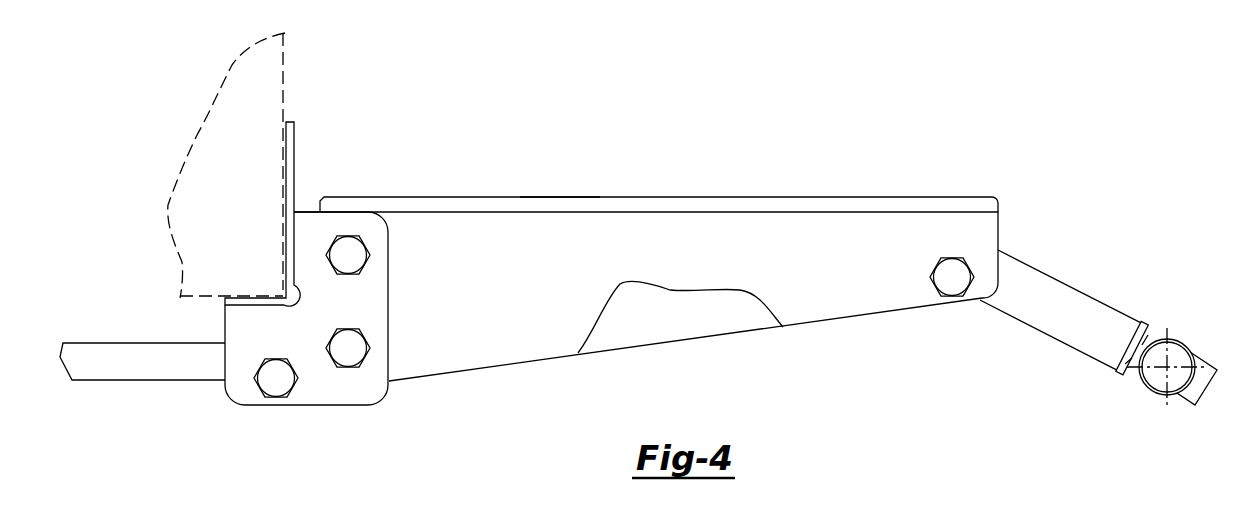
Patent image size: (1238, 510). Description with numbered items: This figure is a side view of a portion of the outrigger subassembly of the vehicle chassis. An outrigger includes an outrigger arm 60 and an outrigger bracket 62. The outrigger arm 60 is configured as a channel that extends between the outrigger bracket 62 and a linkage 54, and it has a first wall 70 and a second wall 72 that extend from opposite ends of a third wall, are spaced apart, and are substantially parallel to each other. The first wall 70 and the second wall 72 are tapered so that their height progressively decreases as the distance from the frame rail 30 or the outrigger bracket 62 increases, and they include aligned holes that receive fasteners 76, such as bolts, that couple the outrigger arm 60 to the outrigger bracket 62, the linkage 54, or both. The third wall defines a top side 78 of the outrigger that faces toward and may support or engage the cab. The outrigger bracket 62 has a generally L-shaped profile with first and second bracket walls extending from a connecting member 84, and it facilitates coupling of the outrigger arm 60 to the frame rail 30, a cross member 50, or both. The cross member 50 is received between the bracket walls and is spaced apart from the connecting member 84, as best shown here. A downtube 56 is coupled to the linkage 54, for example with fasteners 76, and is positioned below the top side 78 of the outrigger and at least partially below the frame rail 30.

The frame rail 30 is at (240, 195).
The cross member 50 is at (188, 380).
The linkage 54 is at (1017, 258).
The downtube 56 is at (1153, 393).
The outrigger arm 60 is at (473, 197).
The outrigger bracket 62 is at (325, 405).
The first wall 70 is at (546, 283).
The second wall 72 is at (650, 321).
The fasteners 76 is at (348, 253).
The top side 78 is at (555, 197).
The connecting member 84 is at (294, 155).